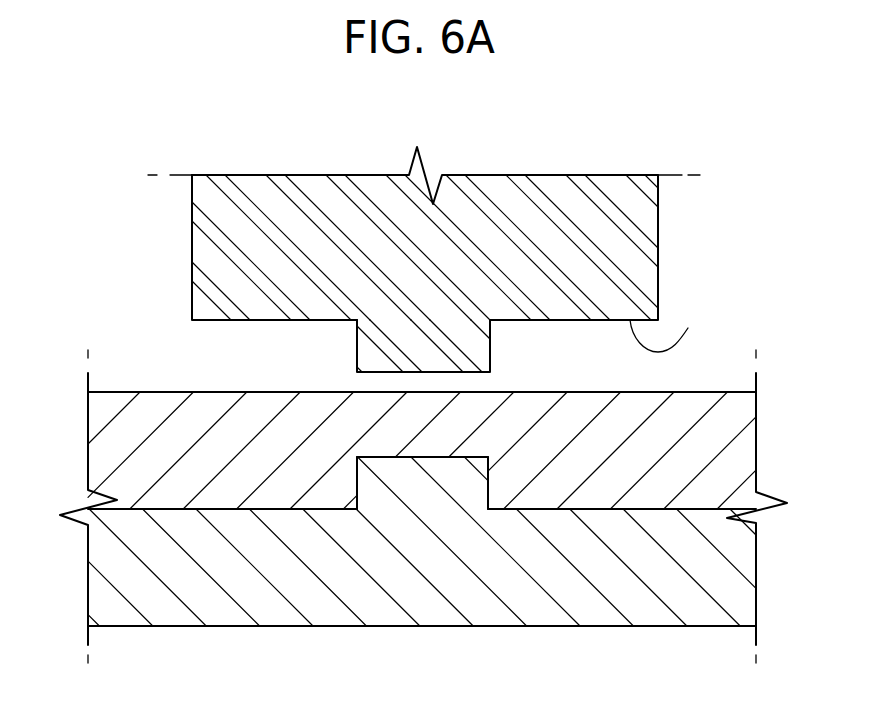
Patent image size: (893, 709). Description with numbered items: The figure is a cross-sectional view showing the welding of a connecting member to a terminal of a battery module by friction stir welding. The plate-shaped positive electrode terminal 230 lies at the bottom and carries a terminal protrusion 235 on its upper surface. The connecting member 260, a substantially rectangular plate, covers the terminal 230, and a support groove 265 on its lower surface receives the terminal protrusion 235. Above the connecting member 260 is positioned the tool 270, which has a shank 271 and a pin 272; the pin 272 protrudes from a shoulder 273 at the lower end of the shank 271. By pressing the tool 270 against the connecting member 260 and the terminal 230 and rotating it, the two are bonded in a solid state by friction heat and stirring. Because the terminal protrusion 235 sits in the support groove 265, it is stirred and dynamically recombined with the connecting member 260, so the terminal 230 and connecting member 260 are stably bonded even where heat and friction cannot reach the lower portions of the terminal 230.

The positive electrode terminal 230 is at (389, 573).
The terminal protrusion 235 is at (488, 488).
The connecting member 260 is at (405, 531).
The support groove 265 is at (357, 486).
The tool 270 is at (444, 259).
The shank 271 is at (205, 246).
The pin 272 is at (490, 355).
The shoulder 273 is at (688, 328).